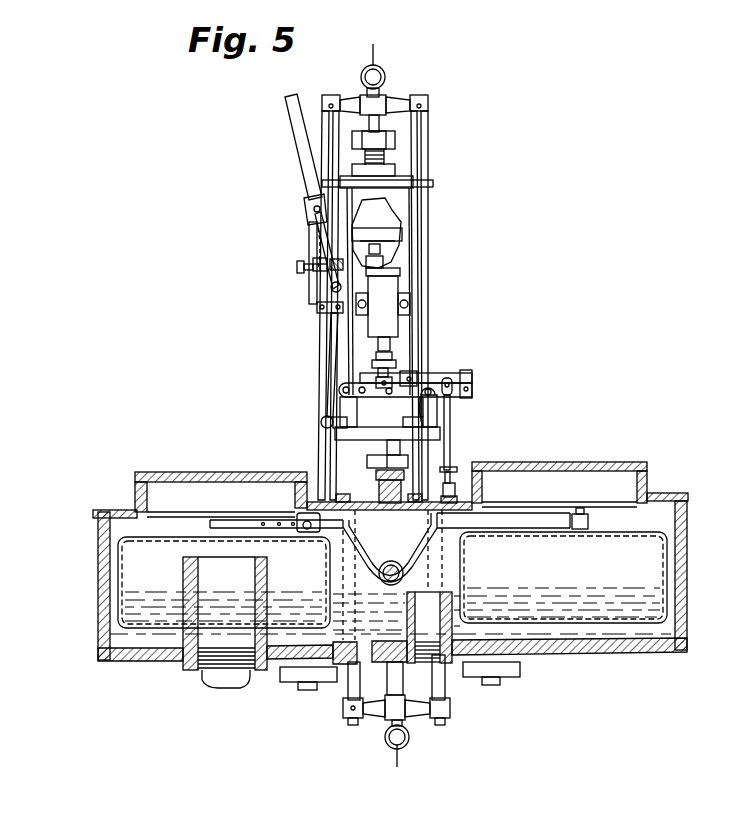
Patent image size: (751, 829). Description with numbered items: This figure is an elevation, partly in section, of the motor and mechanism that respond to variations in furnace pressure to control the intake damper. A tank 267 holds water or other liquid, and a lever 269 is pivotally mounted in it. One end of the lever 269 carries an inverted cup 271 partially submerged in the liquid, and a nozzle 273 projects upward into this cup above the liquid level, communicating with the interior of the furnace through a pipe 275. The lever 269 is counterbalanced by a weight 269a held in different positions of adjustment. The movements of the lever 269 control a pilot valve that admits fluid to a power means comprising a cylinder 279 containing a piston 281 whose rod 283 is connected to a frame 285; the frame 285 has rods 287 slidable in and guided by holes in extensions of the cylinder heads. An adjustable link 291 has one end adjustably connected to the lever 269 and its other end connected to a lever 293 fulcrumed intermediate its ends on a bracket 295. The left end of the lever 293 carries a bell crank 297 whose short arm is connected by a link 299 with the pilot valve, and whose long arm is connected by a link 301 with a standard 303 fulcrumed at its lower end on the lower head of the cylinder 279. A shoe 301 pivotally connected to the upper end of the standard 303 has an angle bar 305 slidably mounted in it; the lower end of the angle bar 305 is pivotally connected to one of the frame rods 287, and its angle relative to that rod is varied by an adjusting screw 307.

The tank 267 is at (686, 541).
The lever 269 is at (227, 526).
The weight 269a is at (303, 521).
The inverted cup 271 is at (124, 558).
The nozzle 273 is at (202, 578).
The pipe 275 is at (222, 681).
The cylinder 279 is at (390, 264).
The piston 281 is at (397, 228).
The rod 283 is at (379, 124).
The frame 285 is at (432, 148).
The frame rods 287 is at (328, 152).
The adjustable link 291 is at (450, 448).
The lever 293 is at (413, 392).
The bracket 295 is at (430, 412).
The bell crank 297 is at (342, 355).
The link 299 is at (372, 372).
The link 301 is at (308, 206).
The standard 303 is at (318, 281).
The angle bar 305 is at (299, 133).
The adjusting screw 307 is at (297, 266).